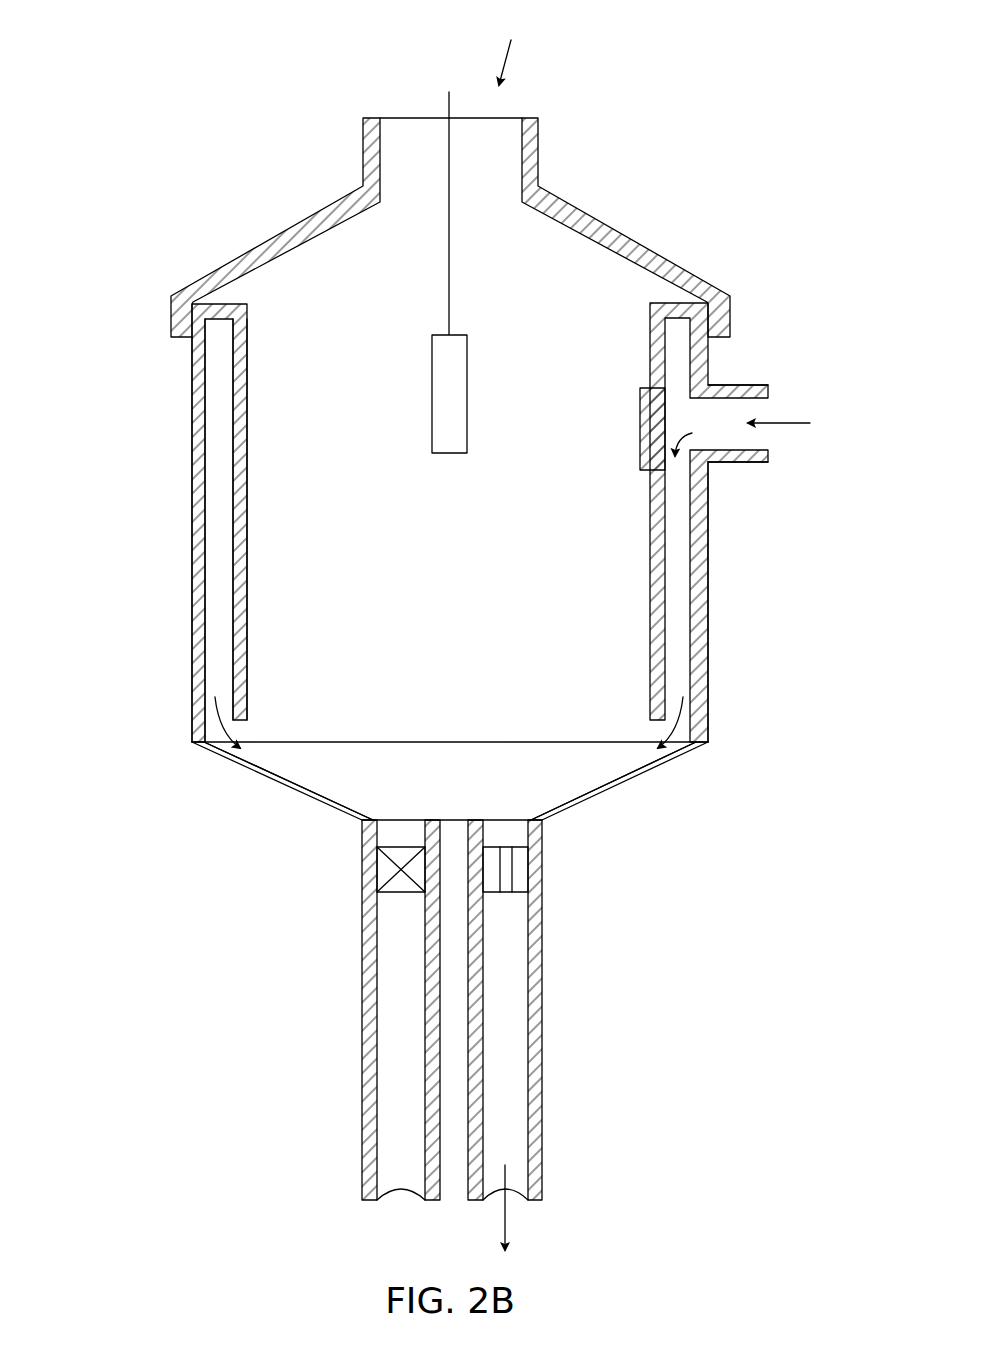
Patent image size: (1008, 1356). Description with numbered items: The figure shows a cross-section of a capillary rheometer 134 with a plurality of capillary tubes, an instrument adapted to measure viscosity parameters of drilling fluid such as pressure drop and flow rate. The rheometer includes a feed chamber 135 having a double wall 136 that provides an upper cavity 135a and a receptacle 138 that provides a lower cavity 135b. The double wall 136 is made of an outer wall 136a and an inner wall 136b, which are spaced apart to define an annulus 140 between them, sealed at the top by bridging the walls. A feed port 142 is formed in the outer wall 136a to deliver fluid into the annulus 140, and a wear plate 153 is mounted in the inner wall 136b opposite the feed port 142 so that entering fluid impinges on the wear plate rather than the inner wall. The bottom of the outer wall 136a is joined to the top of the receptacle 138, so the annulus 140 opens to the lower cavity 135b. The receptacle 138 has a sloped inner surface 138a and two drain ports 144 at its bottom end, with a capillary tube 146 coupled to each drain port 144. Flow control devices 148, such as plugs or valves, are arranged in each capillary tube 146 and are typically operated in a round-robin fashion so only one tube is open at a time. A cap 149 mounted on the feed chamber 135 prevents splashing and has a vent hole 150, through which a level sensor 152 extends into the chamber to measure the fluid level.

The capillary rheometer 134 is at (511, 48).
The vent hole 150 is at (512, 150).
The cap 149 is at (622, 233).
The feed port 142 is at (737, 413).
The wear plate 153 is at (656, 413).
The double wall 136 is at (192, 478).
The outer wall 136a is at (194, 412).
The inner wall 136b is at (243, 633).
The annulus 140 is at (220, 538).
The feed chamber 135 is at (710, 601).
The upper cavity 135a is at (704, 520).
The lower cavity 135b is at (625, 758).
The receptacle 138 is at (265, 778).
The inner surface 138a is at (302, 782).
The drain port 144 is at (401, 818).
The capillary tube 146 is at (365, 990).
The flow control device 148 is at (378, 871).
The level sensor 152 is at (449, 453).